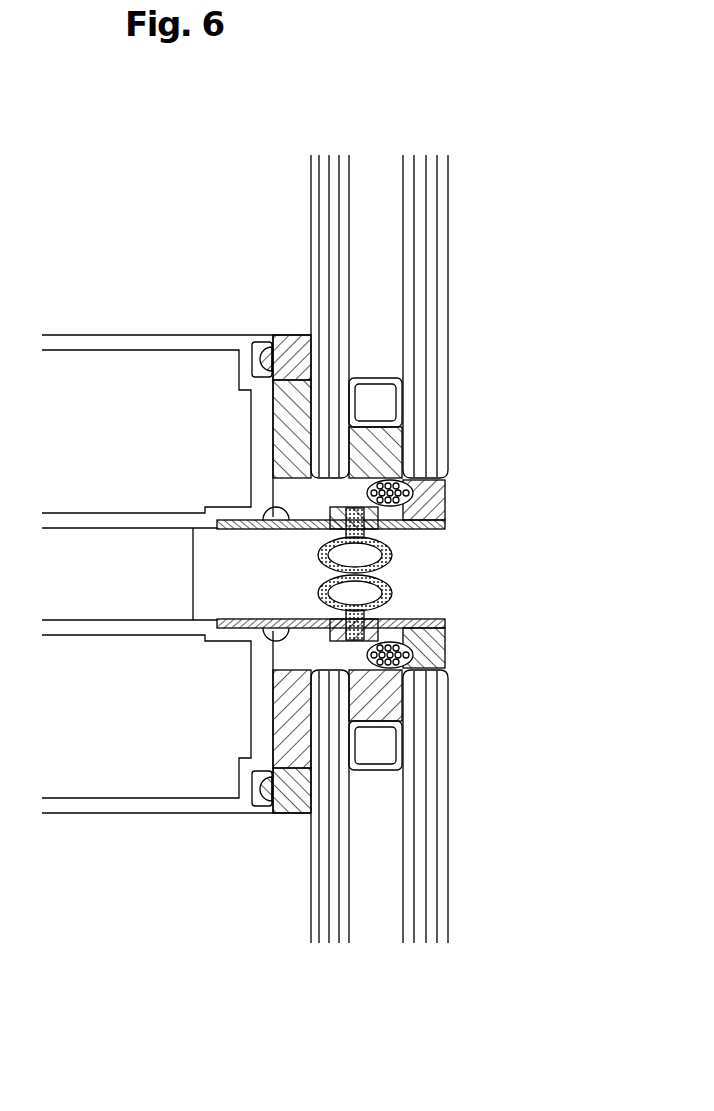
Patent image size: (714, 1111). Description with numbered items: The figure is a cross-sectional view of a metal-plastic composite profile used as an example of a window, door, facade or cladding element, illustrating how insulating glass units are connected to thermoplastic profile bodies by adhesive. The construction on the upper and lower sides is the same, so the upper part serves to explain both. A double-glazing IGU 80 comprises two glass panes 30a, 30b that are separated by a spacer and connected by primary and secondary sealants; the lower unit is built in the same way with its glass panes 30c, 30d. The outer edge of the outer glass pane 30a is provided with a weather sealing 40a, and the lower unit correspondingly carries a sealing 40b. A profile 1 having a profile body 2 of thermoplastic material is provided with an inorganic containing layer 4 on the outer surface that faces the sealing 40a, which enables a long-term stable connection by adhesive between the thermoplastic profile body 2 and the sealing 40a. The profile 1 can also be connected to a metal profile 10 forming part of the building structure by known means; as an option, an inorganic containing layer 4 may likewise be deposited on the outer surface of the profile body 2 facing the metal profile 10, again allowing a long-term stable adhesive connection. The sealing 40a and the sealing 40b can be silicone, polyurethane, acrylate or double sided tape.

The profile 1 is at (379, 571).
The profile body 2 is at (410, 530).
The inorganic containing layer 4 is at (444, 519).
The metal profile 10 is at (261, 448).
The glass pane 30a is at (433, 180).
The glass pane 30b is at (333, 177).
The glass pane 30c is at (422, 918).
The glass pane 30d is at (326, 918).
The weather sealing 40a is at (447, 493).
The sealing 40b is at (447, 660).
The double-glazing IGU 80 is at (444, 541).